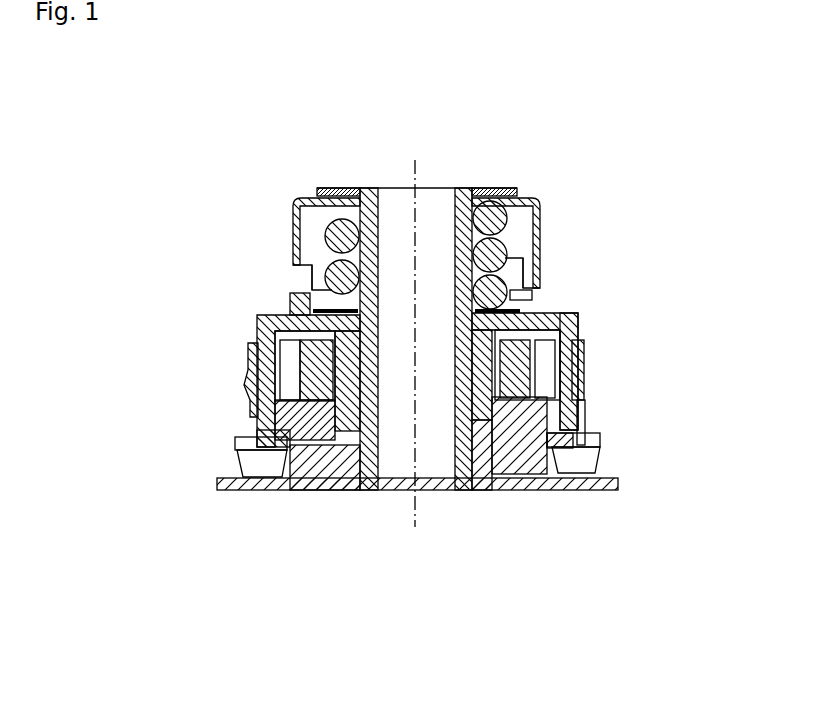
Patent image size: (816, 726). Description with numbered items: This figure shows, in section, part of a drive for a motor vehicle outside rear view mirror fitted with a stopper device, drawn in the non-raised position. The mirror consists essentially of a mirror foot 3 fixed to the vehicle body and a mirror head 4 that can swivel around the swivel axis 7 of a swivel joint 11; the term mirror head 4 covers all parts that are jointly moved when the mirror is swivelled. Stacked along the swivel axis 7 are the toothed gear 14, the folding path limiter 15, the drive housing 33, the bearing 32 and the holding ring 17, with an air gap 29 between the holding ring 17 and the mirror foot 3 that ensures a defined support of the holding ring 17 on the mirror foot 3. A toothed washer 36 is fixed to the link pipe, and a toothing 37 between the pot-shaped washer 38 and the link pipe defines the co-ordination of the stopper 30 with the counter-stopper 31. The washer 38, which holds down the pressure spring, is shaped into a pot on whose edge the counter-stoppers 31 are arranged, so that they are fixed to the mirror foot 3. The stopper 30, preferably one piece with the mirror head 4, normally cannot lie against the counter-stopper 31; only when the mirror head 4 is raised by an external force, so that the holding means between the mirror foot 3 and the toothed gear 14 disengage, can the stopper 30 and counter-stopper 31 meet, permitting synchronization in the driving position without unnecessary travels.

The mirror foot 3 is at (217, 488).
The mirror head 4 is at (283, 313).
The swivel axis 7 is at (413, 173).
The swivel joint 11 is at (345, 430).
The toothed gear 14 is at (517, 373).
The folding path limiter 15 is at (490, 490).
The holding ring 17 is at (527, 490).
The air gap 29 is at (327, 490).
The stopper 30 is at (295, 295).
The counter-stopper 31 is at (313, 290).
The bearing 32 is at (330, 358).
The drive housing 33 is at (237, 447).
The toothed washer 36 is at (510, 187).
The toothing 37 is at (467, 187).
The washer 38 is at (540, 247).